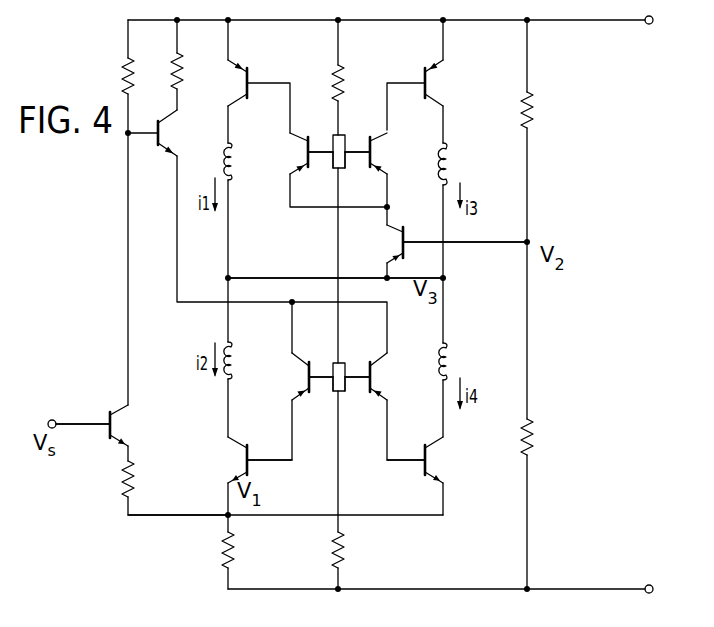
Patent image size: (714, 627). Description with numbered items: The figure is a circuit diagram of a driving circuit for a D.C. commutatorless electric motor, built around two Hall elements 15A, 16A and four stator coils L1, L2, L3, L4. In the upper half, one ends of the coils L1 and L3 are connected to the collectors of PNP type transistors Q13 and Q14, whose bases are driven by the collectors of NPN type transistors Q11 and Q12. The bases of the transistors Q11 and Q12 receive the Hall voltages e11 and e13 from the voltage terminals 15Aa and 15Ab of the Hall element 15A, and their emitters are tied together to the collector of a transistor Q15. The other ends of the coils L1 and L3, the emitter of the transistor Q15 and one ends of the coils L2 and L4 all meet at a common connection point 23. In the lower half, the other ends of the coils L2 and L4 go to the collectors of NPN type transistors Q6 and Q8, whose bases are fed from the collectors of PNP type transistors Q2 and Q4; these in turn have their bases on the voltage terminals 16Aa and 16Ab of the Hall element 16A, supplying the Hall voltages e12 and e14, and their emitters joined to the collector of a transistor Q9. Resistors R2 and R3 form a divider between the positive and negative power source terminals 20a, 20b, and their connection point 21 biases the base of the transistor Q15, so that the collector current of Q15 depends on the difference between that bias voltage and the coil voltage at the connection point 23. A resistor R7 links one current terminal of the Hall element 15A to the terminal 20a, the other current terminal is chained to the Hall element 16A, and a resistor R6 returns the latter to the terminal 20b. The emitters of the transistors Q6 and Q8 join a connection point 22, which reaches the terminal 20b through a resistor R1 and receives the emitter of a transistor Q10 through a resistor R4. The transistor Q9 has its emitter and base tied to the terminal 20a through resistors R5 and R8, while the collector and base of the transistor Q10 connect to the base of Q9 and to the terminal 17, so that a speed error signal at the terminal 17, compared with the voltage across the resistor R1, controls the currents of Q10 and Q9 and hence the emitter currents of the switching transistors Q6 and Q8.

The Hall element 15A is at (336, 133).
The voltage terminal 15Aa is at (331, 167).
The voltage terminal 15Ab is at (347, 168).
The Hall element 16A is at (339, 362).
The voltage terminal 16Aa is at (330, 382).
The voltage terminal 16Ab is at (347, 382).
The terminal 17 is at (53, 418).
The positive power source terminal 20a is at (651, 24).
The negative power source terminal 20b is at (650, 585).
The connection point 21 is at (530, 240).
The connection point 22 is at (227, 517).
The connection point 23 is at (447, 280).
The Hall voltage e11 is at (322, 150).
The Hall voltage e12 is at (322, 377).
The Hall voltage e13 is at (355, 150).
The Hall voltage e14 is at (358, 377).
The PNP type transistor Q2 is at (300, 376).
The PNP type transistor Q4 is at (380, 376).
The NPN type transistor Q6 is at (246, 460).
The NPN type transistor Q8 is at (427, 460).
The transistor Q9 is at (180, 133).
The transistor Q10 is at (112, 425).
The NPN type transistor Q11 is at (300, 153).
The NPN type transistor Q12 is at (381, 153).
The PNP type transistor Q13 is at (250, 73).
The PNP type transistor Q14 is at (455, 83).
The transistor Q15 is at (444, 244).
The resistor R1 is at (241, 550).
The resistor R2 is at (539, 110).
The resistor R3 is at (539, 437).
The resistor R4 is at (141, 479).
The resistor R5 is at (189, 71).
The resistor R6 is at (352, 550).
The resistor R7 is at (352, 83).
The resistor R8 is at (114, 76).
The stator coil L1 is at (242, 165).
The stator coil L2 is at (243, 356).
The stator coil L3 is at (457, 164).
The stator coil L4 is at (458, 361).